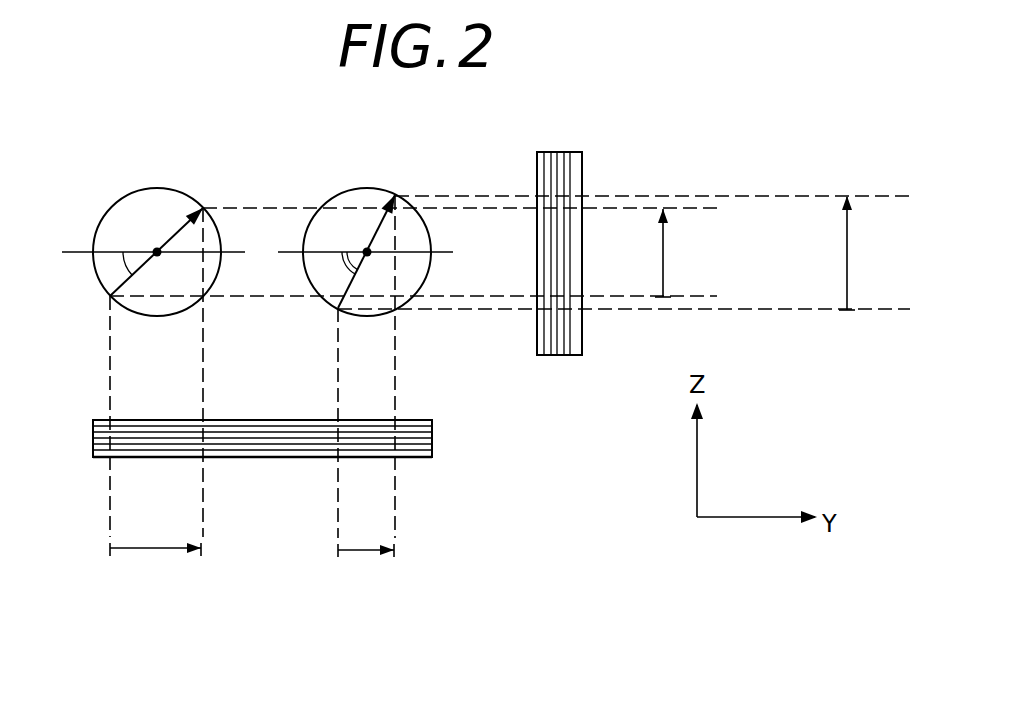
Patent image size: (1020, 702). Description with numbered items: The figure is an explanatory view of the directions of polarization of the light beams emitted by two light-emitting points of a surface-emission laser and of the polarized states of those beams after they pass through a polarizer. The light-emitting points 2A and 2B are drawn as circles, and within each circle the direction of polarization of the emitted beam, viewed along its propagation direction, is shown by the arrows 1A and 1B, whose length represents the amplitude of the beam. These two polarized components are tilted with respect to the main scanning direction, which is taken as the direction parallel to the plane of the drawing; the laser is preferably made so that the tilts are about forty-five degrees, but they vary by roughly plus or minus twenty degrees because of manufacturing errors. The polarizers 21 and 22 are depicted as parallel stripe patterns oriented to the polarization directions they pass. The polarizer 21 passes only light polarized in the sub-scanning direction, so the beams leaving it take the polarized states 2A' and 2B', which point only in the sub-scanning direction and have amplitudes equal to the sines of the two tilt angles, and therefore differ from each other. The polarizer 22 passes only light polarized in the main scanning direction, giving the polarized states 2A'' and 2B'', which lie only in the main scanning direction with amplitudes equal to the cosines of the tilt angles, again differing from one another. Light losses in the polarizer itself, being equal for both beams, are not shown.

The light-emitting point 2A is at (153, 221).
The arrow 1A is at (168, 232).
The light-emitting point 2B is at (365, 221).
The arrow 1B is at (376, 233).
The polarizer 21 is at (568, 151).
The polarizer 22 is at (433, 434).
The polarized state 2A' is at (430, 252).
The polarized state 2B' is at (630, 253).
The polarized state 2A'' is at (156, 412).
The polarized state 2B'' is at (366, 406).